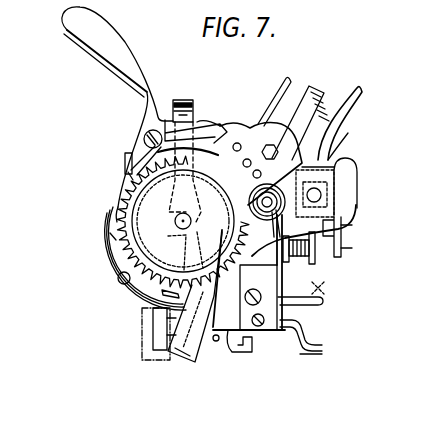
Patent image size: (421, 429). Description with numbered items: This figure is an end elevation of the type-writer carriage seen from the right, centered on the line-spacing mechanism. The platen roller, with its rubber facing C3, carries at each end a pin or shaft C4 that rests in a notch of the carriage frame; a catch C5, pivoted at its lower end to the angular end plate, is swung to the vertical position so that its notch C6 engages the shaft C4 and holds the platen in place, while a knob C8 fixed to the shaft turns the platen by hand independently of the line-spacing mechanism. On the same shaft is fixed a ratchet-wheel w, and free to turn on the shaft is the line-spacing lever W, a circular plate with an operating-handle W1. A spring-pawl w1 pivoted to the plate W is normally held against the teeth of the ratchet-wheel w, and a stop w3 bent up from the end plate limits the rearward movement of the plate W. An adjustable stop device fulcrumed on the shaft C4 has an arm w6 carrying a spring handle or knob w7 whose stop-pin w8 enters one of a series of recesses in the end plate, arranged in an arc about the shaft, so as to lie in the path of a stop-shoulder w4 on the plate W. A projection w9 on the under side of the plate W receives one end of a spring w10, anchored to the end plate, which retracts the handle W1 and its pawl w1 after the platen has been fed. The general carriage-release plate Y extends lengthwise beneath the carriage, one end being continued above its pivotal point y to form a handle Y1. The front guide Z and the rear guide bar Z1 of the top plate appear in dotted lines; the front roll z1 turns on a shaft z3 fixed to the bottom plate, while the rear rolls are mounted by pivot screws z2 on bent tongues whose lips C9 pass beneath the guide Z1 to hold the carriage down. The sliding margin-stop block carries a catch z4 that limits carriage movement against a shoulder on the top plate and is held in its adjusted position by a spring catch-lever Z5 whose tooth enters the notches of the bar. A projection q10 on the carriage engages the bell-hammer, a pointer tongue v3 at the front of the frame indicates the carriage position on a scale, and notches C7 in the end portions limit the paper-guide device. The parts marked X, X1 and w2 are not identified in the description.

The operating-handle W1 is at (117, 64).
The line-spacing lever W is at (170, 150).
The spring-pawl w1 is at (144, 143).
The pawl w2 is at (125, 163).
The stop w3 is at (124, 186).
The ratchet-wheel w is at (117, 202).
The pointer tongue v3 is at (110, 233).
The catch C5 is at (184, 101).
The platen shaft C4 is at (198, 122).
The stop-shoulder w4 is at (223, 132).
The notch C6 is at (247, 160).
The rubber facing C3 is at (270, 184).
The bar X is at (283, 92).
The handle Y1 is at (322, 90).
The catch z4 is at (346, 106).
The arm w6 is at (341, 146).
The spring catch-lever Z5 is at (346, 170).
The spring handle or knob w7 is at (304, 230).
The shaft z3 is at (343, 238).
The pivot pins or screws z2 is at (345, 244).
The stop-pin w8 is at (312, 262).
The rear guide Z1 is at (326, 290).
The lips C9 is at (281, 306).
The knob C8 is at (312, 337).
The projection q10 is at (305, 367).
The spring w10 is at (245, 357).
The notches C7 is at (216, 342).
The release plate Y is at (176, 366).
The pivotal point y is at (184, 368).
The front guide Z is at (142, 347).
The front guide-roll z1 is at (155, 332).
The projection w9 is at (160, 296).
The pin X1 is at (118, 278).